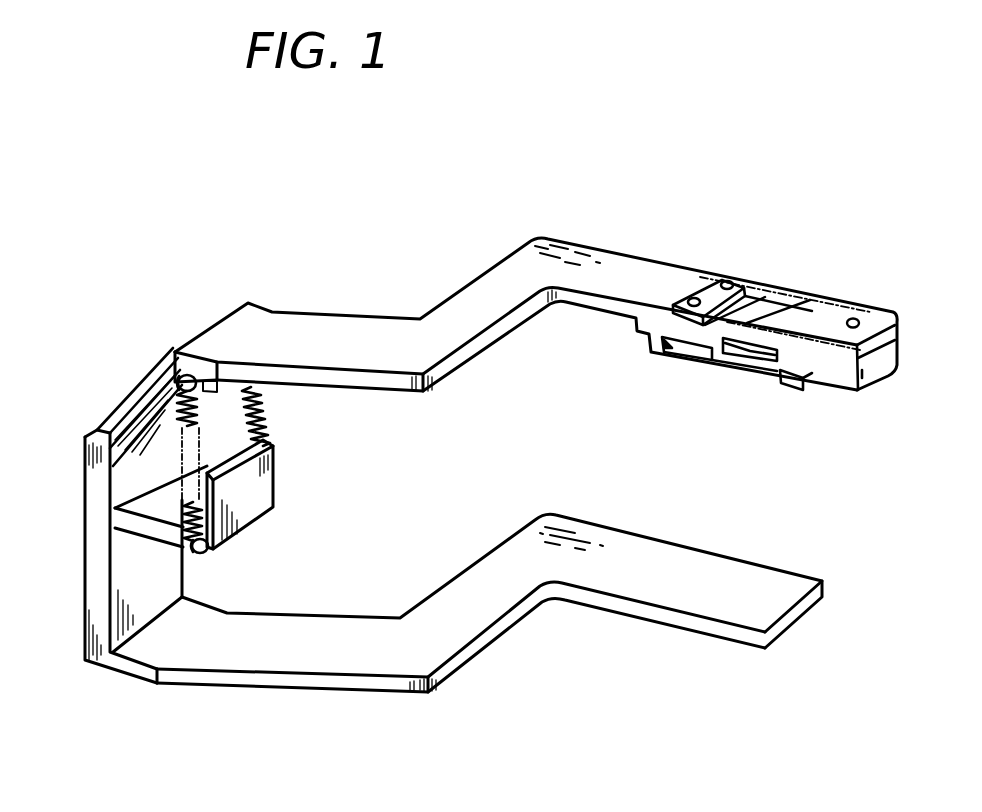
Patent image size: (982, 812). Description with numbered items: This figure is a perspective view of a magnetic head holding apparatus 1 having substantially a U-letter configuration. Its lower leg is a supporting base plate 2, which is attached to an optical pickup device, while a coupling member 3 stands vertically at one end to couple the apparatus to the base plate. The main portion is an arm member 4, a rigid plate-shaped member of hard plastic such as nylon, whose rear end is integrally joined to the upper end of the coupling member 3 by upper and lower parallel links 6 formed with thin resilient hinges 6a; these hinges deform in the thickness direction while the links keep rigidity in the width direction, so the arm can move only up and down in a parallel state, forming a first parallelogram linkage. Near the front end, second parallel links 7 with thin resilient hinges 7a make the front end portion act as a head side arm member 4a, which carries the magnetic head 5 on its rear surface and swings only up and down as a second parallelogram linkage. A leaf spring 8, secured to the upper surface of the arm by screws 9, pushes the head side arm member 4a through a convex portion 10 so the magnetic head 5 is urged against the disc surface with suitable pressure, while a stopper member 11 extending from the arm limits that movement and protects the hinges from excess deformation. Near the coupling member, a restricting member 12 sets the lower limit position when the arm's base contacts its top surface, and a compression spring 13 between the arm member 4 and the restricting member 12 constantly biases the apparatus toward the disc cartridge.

The magnetic head holding apparatus 1 is at (571, 241).
The supporting base plate 2 is at (299, 686).
The coupling member 3 is at (84, 560).
The arm member 4 is at (466, 320).
The head side arm member 4a is at (828, 372).
The magnetic head 5 is at (866, 384).
The parallel links 6 is at (150, 383).
The resilient hinges 6a is at (174, 350).
The second parallel links 7 is at (744, 360).
The resilient hinges 7a is at (697, 364).
The leaf spring 8 is at (828, 290).
The screws 9 is at (698, 300).
The convex portion 10 is at (857, 318).
The stopper member 11 is at (790, 386).
The restricting member 12 is at (253, 500).
The compression spring 13 is at (200, 412).